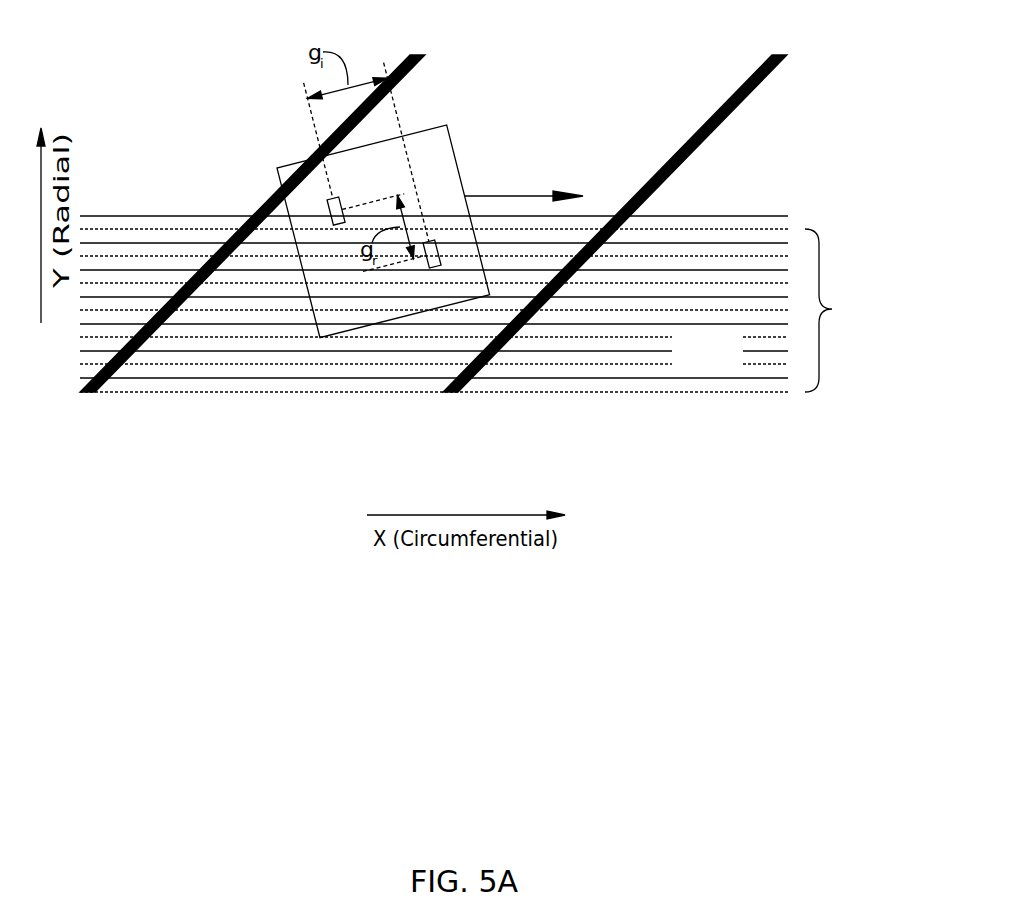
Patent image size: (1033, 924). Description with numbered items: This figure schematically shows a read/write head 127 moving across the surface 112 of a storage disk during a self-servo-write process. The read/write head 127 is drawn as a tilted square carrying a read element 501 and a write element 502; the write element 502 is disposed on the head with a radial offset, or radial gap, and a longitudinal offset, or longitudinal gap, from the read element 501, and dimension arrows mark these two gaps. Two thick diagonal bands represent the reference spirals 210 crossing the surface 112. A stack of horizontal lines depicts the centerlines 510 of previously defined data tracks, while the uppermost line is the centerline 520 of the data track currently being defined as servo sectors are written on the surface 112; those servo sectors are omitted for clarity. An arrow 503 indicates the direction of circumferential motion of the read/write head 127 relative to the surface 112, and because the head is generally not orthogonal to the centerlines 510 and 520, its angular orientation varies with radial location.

The surface 112 is at (150, 134).
The centerline 520 is at (182, 216).
The centerlines 510 is at (834, 309).
The reference spirals 210 is at (84, 394).
The read/write head 127 is at (460, 175).
The write element 502 is at (340, 229).
The read element 501 is at (437, 272).
The arrow 503 is at (510, 196).